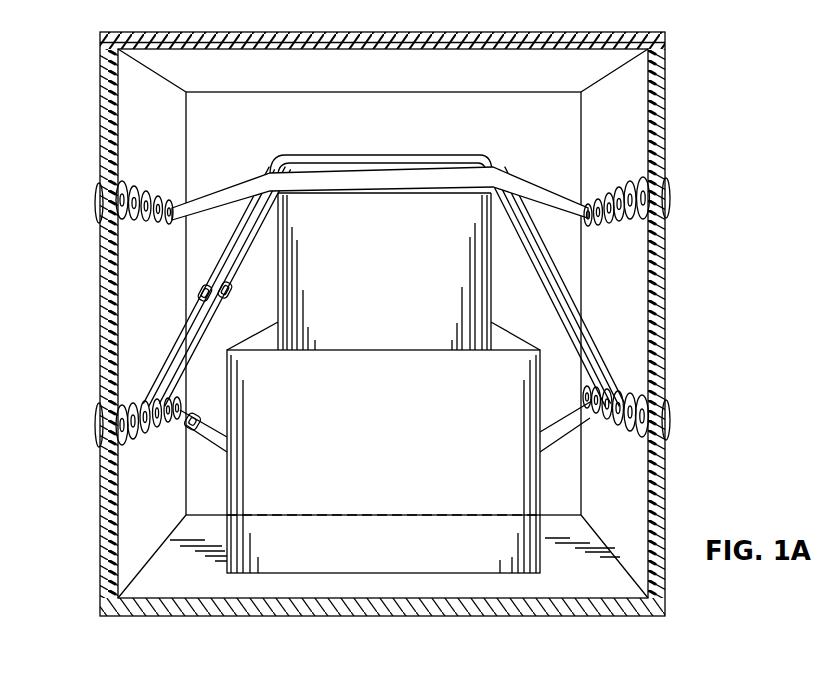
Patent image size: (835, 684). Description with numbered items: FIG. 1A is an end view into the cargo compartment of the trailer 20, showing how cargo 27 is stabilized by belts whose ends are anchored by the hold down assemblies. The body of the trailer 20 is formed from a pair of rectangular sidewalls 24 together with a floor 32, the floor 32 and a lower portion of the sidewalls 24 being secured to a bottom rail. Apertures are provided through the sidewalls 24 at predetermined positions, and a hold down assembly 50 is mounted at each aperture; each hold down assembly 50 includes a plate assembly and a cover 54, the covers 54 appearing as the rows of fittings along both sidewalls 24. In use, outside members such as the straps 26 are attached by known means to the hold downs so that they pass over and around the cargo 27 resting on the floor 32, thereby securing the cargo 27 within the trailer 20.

The trailer 20 is at (100, 96).
The sidewalls 24 is at (89, 167).
The straps 26 is at (428, 183).
The cargo 27 is at (262, 281).
The floor 32 is at (567, 565).
The hold down assembly 50 is at (177, 197).
The cover 54 is at (96, 203).